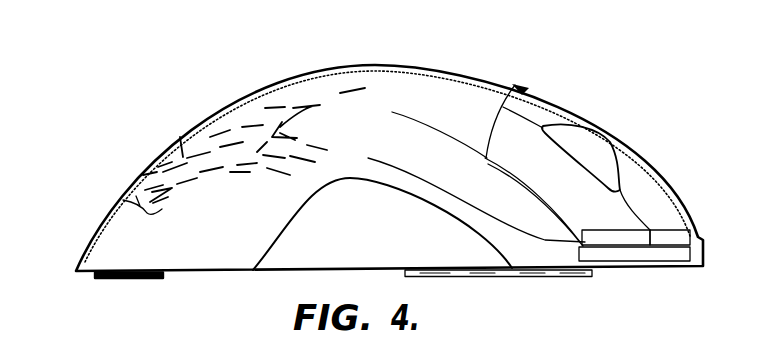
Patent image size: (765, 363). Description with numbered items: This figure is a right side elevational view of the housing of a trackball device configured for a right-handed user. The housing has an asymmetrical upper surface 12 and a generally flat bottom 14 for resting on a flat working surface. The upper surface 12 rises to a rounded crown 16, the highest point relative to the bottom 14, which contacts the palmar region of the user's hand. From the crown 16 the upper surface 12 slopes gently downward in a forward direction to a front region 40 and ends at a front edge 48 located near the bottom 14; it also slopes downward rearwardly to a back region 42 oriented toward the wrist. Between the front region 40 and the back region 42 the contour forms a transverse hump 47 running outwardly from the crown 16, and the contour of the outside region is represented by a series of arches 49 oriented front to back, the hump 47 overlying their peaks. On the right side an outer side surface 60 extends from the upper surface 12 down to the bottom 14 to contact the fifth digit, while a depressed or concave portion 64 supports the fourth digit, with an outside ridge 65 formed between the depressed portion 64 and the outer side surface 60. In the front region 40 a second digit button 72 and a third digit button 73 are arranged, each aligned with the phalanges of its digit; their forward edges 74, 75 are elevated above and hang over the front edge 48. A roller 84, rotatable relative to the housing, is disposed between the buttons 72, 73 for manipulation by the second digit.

The upper surface 12 is at (450, 55).
The bottom 14 is at (203, 273).
The crown 16 is at (331, 82).
The front region 40 is at (669, 181).
The back region 42 is at (108, 216).
The transverse hump 47 is at (237, 105).
The front edge 48 is at (663, 260).
The arches 49 is at (120, 203).
The outer side surface 60 is at (320, 240).
The depressed portion 64 is at (539, 224).
The outside ridge 65 is at (427, 188).
The second digit button 72 is at (549, 115).
The third digit button 73 is at (531, 155).
The forward edge 74 is at (662, 240).
The forward edge 75 is at (615, 243).
The roller 84 is at (612, 135).